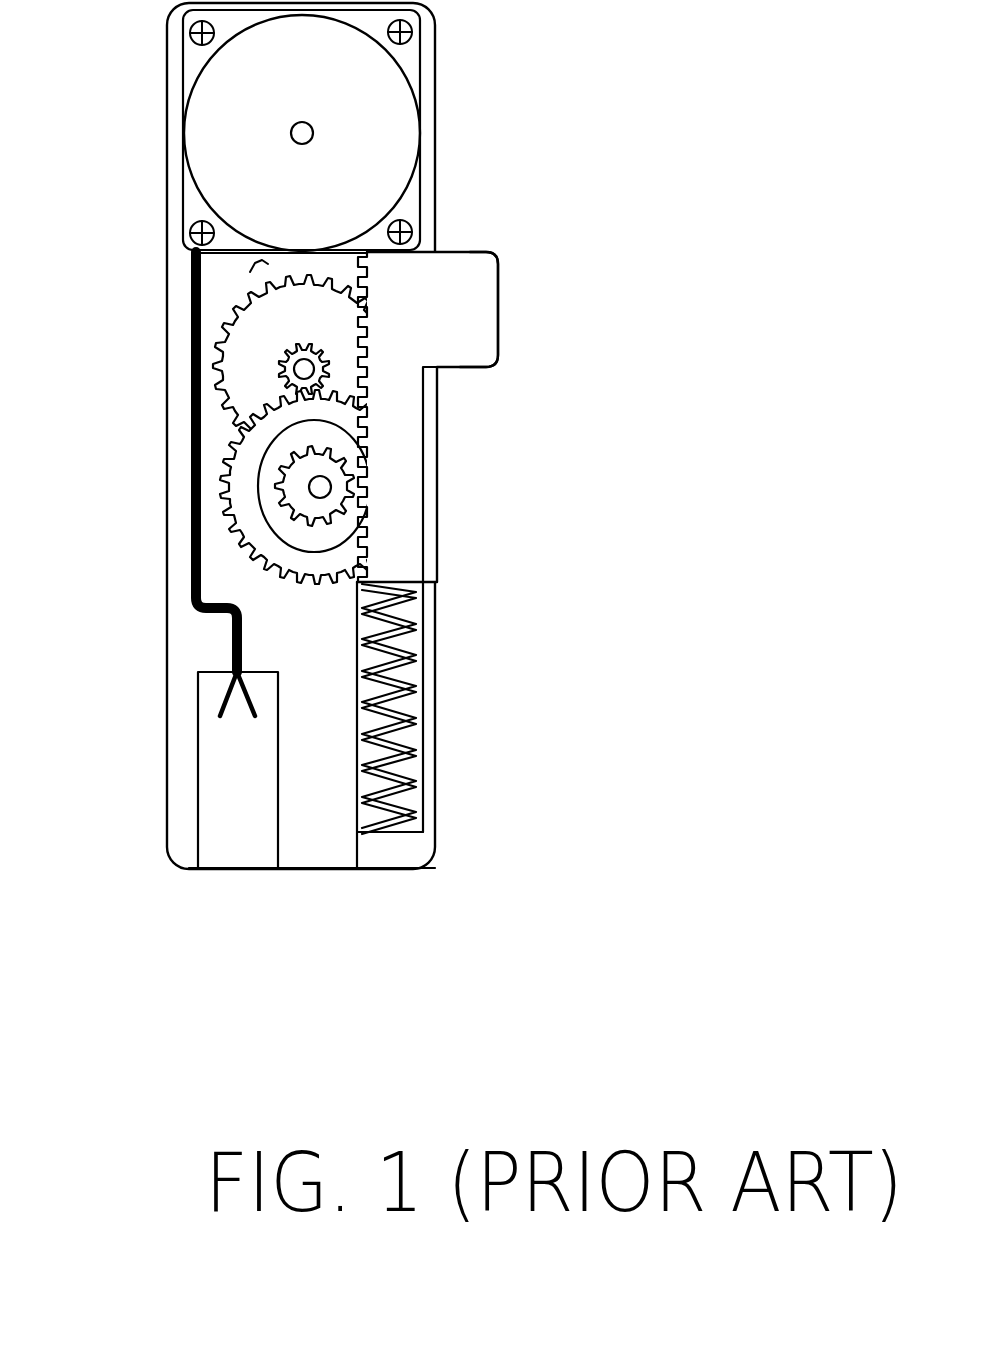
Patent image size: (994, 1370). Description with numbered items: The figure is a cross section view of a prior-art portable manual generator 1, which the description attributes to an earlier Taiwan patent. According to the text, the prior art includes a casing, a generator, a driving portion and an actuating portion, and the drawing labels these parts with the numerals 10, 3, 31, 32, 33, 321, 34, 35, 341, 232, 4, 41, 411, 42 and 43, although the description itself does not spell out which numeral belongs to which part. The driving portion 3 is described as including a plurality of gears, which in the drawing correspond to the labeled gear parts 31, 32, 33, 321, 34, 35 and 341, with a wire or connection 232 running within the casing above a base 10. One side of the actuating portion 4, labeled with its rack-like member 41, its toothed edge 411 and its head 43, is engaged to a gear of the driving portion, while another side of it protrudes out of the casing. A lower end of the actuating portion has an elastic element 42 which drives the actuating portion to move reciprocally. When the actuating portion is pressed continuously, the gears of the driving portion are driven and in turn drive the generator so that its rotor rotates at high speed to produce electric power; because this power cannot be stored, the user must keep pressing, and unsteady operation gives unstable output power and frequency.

The housing 1 is at (157, 262).
The base 10 is at (403, 855).
The gear train 3 is at (225, 447).
The drive gear 31 is at (262, 263).
The first gear 32 is at (218, 333).
The first pinion 33 is at (284, 357).
The first shaft 321 is at (304, 369).
The second gear 34 is at (223, 481).
The second pinion 35 is at (285, 466).
The second shaft 341 is at (321, 487).
The wire 232 is at (232, 656).
The rack member 4 is at (443, 392).
The rack plate 41 is at (450, 257).
The rack teeth 411 is at (358, 412).
The spring 42 is at (417, 607).
The head portion 43 is at (453, 251).